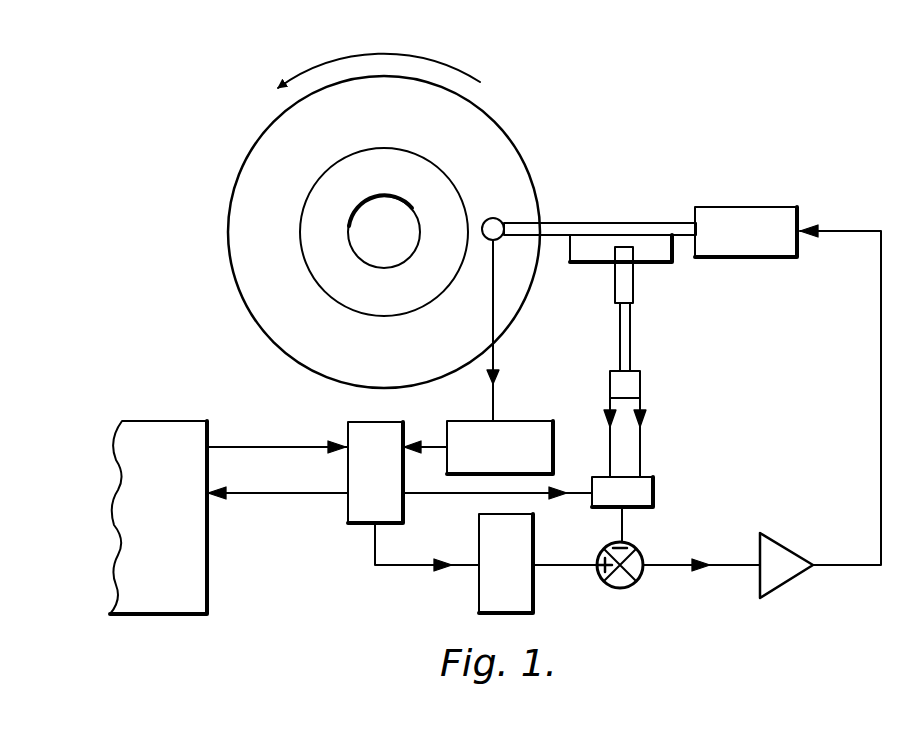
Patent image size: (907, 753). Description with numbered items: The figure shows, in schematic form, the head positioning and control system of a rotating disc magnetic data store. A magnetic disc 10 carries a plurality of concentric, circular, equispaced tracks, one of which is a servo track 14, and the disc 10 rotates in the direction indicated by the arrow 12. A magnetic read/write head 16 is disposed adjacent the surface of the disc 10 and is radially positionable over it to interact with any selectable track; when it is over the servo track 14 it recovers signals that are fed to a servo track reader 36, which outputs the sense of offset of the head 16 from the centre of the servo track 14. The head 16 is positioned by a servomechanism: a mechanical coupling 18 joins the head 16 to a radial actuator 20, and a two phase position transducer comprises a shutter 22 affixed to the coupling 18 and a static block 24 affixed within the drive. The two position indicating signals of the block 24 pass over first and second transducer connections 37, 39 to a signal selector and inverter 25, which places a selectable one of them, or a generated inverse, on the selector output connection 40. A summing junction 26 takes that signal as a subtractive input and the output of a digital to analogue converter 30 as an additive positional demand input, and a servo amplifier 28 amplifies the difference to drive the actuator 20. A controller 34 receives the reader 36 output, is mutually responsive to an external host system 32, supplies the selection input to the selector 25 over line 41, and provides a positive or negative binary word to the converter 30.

The magnetic disc 10 is at (228, 238).
The arrow 12 is at (409, 32).
The servo track 14 is at (384, 146).
The magnetic read/write head 16 is at (495, 218).
The mechanical coupling 18 is at (586, 223).
The radial actuator 20 is at (746, 207).
The shutter 22 is at (582, 262).
The static block 24 is at (633, 291).
The signal selector and inverter 25 is at (652, 477).
The summing junction 26 is at (632, 584).
The servo amplifier 28 is at (785, 583).
The digital to analogue converter 30 is at (478, 598).
The external host system 32 is at (163, 604).
The controller 34 is at (348, 505).
The servo track reader 36 is at (518, 421).
The first transducer connection 37 is at (640, 378).
The second transducer connection 39 is at (640, 397).
The selector output connection 40 is at (622, 522).
The control line 41 is at (470, 493).